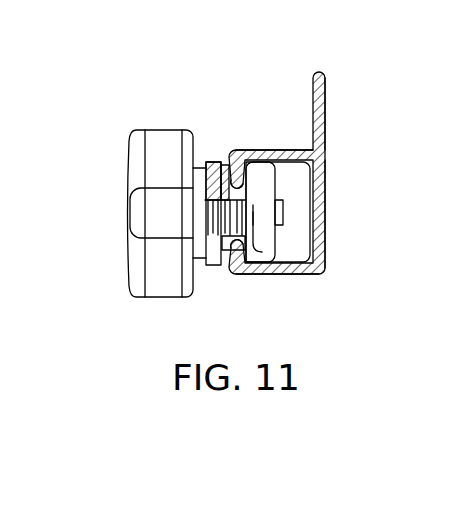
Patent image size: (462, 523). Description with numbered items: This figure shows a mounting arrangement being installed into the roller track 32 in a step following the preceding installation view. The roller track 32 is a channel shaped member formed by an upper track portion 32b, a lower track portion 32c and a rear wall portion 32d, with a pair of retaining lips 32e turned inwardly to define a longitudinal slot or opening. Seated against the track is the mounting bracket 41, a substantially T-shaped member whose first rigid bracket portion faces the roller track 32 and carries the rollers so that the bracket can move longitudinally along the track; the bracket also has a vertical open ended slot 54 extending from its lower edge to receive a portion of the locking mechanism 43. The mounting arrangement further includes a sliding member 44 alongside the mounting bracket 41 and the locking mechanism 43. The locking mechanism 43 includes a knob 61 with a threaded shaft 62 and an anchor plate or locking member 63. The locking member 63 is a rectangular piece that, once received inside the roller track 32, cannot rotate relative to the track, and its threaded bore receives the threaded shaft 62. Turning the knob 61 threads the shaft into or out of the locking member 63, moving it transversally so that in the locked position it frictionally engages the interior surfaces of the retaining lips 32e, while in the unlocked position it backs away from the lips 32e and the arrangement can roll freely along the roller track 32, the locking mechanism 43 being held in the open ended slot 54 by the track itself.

The roller track 32 is at (334, 122).
The upper track portion 32b is at (280, 150).
The lower track portion 32c is at (322, 88).
The rear wall portion 32d is at (320, 242).
The retaining lips 32e is at (238, 158).
The mounting bracket 41 is at (209, 152).
The locking mechanism 43 is at (117, 276).
The sliding member 44 is at (229, 165).
The vertical open ended slot 54 is at (217, 265).
The knob 61 is at (155, 132).
The threaded shaft 62 is at (283, 216).
The anchor plate or locking member 63 is at (276, 185).